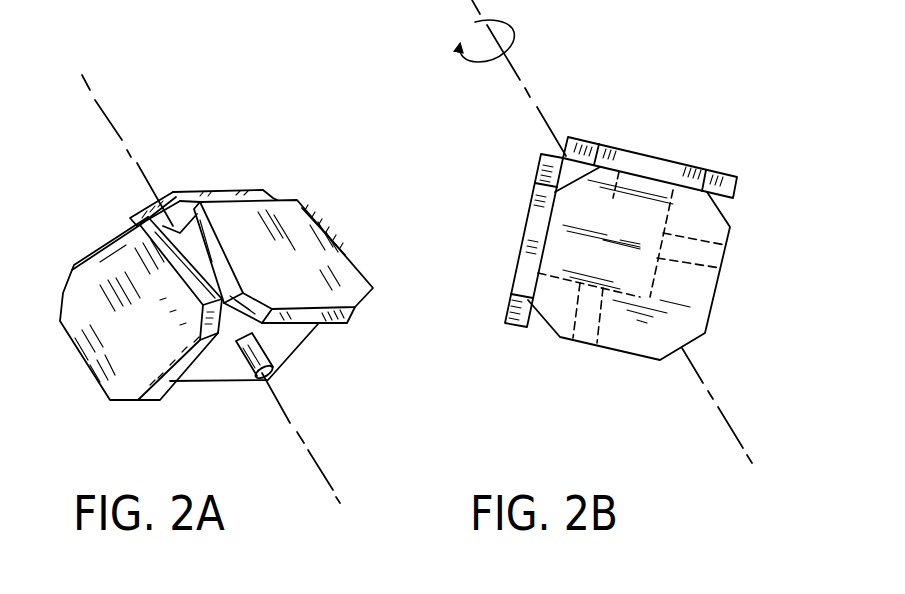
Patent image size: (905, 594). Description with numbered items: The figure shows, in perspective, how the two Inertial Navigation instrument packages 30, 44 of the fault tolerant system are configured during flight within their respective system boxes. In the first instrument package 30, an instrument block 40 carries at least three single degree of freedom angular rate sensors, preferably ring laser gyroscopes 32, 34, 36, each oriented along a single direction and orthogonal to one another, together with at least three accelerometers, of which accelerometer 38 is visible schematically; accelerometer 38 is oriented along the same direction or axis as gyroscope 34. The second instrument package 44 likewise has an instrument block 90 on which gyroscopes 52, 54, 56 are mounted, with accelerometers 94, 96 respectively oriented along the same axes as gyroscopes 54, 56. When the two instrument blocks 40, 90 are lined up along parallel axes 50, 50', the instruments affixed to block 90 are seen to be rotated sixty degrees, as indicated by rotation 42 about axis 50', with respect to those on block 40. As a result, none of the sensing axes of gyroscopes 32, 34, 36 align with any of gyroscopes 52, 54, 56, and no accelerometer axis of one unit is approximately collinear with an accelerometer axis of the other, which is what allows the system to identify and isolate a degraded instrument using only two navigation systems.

In FIG. 2A, the instrument package 30 is at (205, 189).
In FIG. 2A, the ring laser gyroscope 32 is at (337, 260).
In FIG. 2A, the ring laser gyroscope 34 is at (130, 223).
In FIG. 2A, the ring laser gyroscope 36 is at (75, 310).
In FIG. 2A, the accelerometer 38 is at (248, 362).
In FIG. 2A, the instrument block 40 is at (213, 367).
In FIG. 2A, the axis 50 is at (211, 287).
In FIG. 2B, the rotation 42 is at (512, 42).
In FIG. 2B, the instrument package 44 is at (659, 135).
In FIG. 2B, the axis 50' is at (458, 38).
In FIG. 2B, the gyroscope 52 is at (692, 316).
In FIG. 2B, the gyroscope 54 is at (680, 178).
In FIG. 2B, the gyroscope 56 is at (528, 220).
In FIG. 2B, the instrument block 90 is at (622, 170).
In FIG. 2B, the accelerometer 94 is at (587, 343).
In FIG. 2B, the accelerometer 96 is at (722, 262).